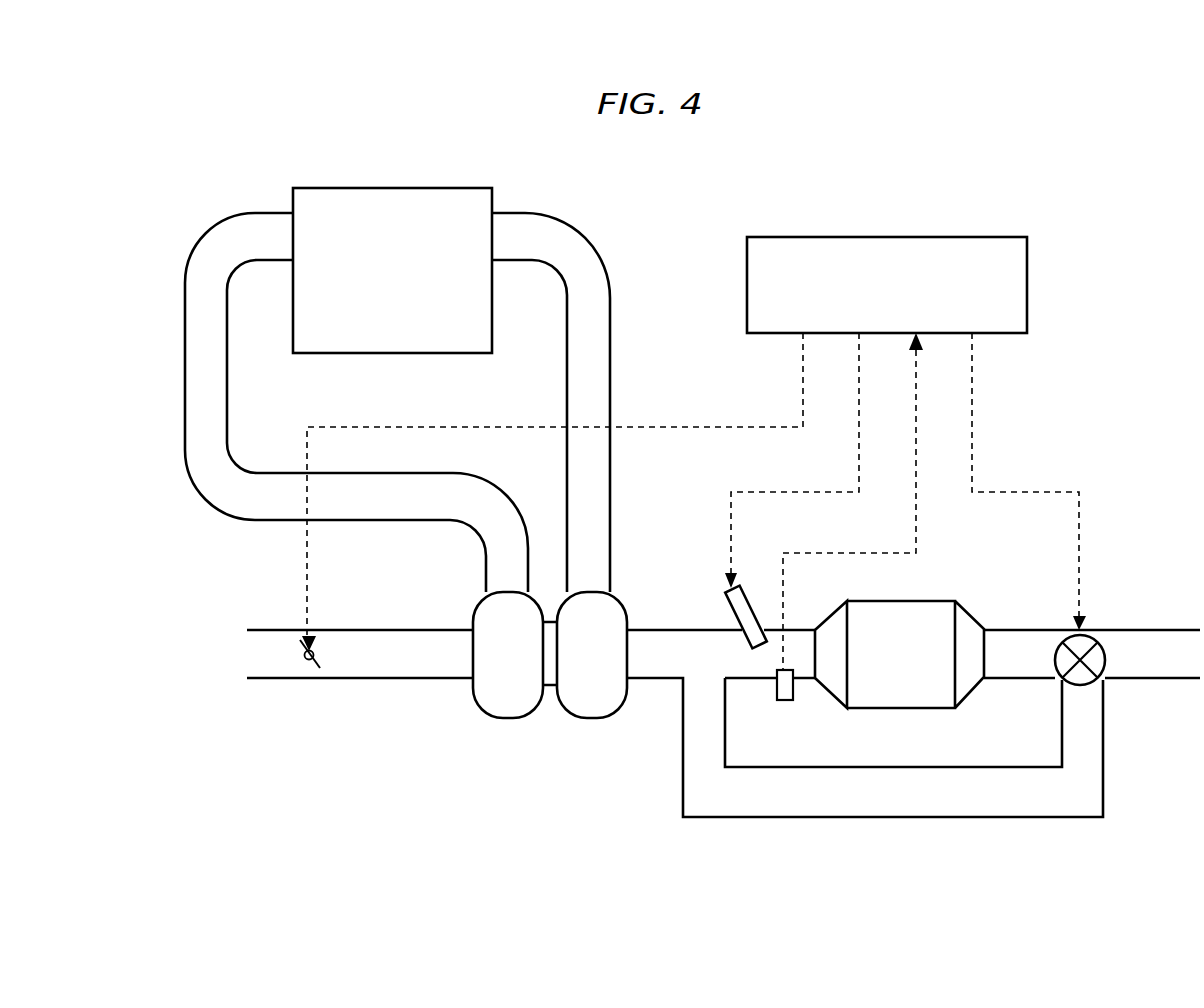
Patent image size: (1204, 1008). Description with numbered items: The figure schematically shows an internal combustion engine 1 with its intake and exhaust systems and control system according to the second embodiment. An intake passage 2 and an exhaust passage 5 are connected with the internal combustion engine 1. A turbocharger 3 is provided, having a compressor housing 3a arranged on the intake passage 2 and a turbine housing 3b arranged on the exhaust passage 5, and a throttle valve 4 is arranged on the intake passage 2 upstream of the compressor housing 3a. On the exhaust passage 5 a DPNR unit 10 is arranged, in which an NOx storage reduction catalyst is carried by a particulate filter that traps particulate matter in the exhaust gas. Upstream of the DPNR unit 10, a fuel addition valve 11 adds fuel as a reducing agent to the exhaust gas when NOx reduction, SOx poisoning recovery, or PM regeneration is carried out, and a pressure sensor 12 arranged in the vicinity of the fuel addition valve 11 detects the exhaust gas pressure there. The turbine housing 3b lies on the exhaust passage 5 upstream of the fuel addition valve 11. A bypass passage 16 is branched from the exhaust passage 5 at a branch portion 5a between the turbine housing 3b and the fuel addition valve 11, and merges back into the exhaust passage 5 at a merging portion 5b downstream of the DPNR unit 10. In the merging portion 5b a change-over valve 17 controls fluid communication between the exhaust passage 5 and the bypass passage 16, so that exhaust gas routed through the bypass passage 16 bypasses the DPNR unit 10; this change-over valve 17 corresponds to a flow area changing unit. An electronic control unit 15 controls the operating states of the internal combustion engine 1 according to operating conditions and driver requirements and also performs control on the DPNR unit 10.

The internal combustion engine 1 is at (492, 330).
The intake passage 2 is at (228, 410).
The turbocharger 3 is at (550, 732).
The compressor housing 3a is at (508, 718).
The turbine housing 3b is at (592, 692).
The throttle valve 4 is at (313, 659).
The exhaust passage 5 is at (610, 310).
The branch portion 5a is at (697, 648).
The merging portion 5b is at (1108, 609).
The DPNR unit 10 is at (920, 601).
The fuel addition valve 11 is at (728, 598).
The pressure sensor 12 is at (785, 700).
The electronic control unit 15 is at (1027, 285).
The bypass passage 16 is at (1103, 748).
The change-over valve 17 is at (1105, 665).